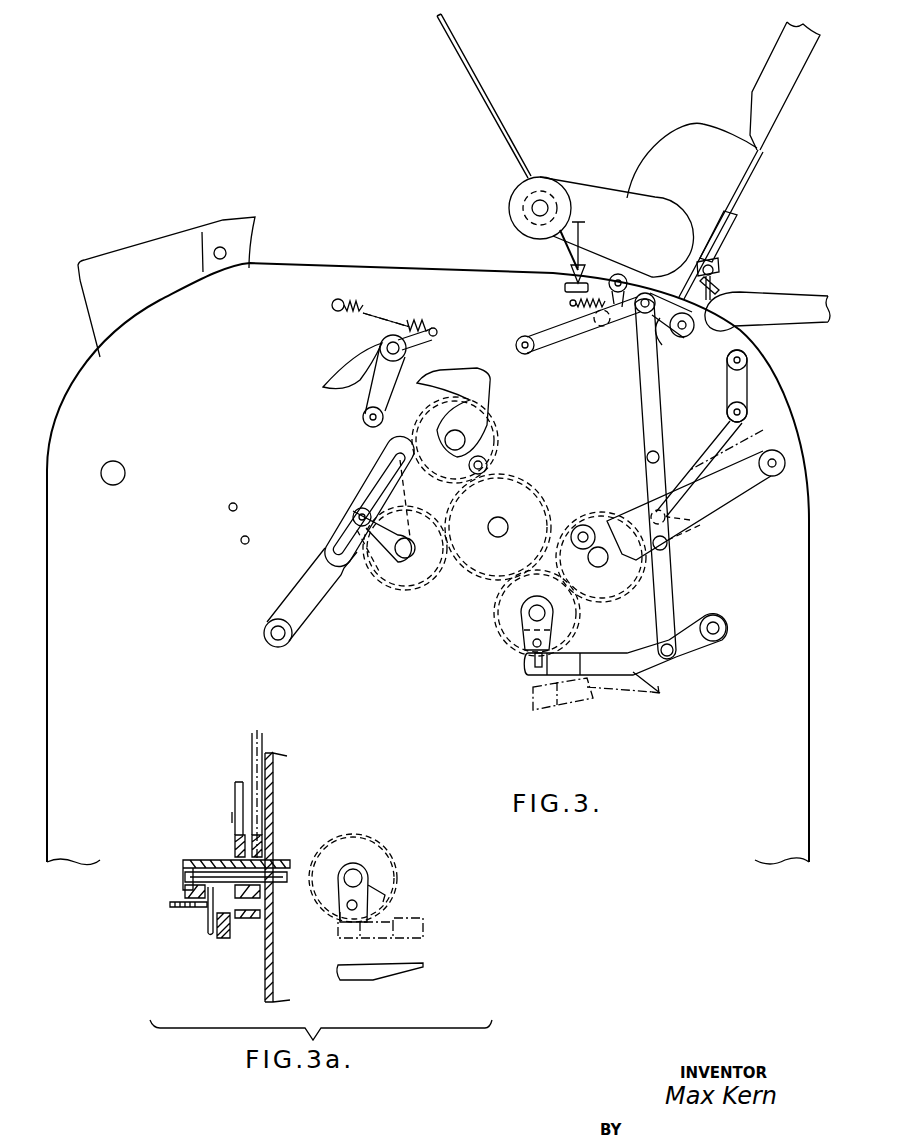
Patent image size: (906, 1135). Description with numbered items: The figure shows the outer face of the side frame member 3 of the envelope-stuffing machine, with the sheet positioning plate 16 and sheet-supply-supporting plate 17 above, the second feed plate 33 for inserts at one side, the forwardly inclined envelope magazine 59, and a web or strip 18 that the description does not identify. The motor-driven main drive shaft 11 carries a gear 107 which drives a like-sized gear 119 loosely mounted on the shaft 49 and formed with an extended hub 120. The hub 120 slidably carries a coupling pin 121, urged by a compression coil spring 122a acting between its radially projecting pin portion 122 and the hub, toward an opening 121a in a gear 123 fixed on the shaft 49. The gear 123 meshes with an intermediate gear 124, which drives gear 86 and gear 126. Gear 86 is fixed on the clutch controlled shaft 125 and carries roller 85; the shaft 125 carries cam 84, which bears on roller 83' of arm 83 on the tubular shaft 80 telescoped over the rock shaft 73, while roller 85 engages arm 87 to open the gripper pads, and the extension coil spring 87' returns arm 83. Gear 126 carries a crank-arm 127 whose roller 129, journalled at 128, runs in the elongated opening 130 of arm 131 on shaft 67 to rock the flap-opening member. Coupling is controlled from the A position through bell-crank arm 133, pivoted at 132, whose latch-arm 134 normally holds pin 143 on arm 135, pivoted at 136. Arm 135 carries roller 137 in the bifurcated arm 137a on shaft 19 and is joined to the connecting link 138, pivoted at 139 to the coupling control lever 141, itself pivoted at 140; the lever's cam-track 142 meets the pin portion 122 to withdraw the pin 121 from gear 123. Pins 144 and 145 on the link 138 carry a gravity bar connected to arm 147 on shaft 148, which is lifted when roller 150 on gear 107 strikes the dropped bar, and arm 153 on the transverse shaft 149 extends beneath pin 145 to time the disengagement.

In FIG. 3, the side frame member 3 is at (47, 746).
In FIG. 3a, the side frame member 3 is at (265, 970).
In FIG. 3, the main drive shaft 11 is at (598, 567).
In FIG. 3a, the main drive shaft 11 is at (232, 818).
In FIG. 3, the sheet positioning plate 16 is at (757, 150).
In FIG. 3, the sheet-supply-supporting plate 17 is at (497, 122).
In FIG. 3, the paper web 18 is at (677, 126).
In FIG. 3, the shaft 19 is at (692, 323).
In FIG. 3, the second feed plate 33 is at (797, 297).
In FIG. 3, the shaft 49 is at (545, 613).
In FIG. 3a, the shaft 49 is at (185, 874).
In FIG. 3, the magazine 59 is at (130, 247).
In FIG. 3, the shaft 67 is at (271, 637).
In FIG. 3, the rock shaft 73 is at (382, 345).
In FIG. 3, the tubular shaft 80 is at (406, 349).
In FIG. 3, the arm 83 is at (366, 380).
In FIG. 3, the roller 83' is at (354, 417).
In FIG. 3, the cam 84 is at (477, 367).
In FIG. 3, the roller 85 is at (489, 462).
In FIG. 3, the gear 86 is at (497, 437).
In FIG. 3, the arm 87 is at (343, 366).
In FIG. 3, the extension coil spring 87' is at (384, 306).
In FIG. 3, the gear 107 is at (600, 512).
In FIG. 3a, the gear 107 is at (235, 790).
In FIG. 3, the gear 119 is at (498, 632).
In FIG. 3a, the gear 119 is at (235, 845).
In FIG. 3a, the extended hub 120 is at (200, 858).
In FIG. 3a, the coupling pin 121 is at (190, 900).
In FIG. 3a, the opening 121a is at (252, 918).
In FIG. 3, the pin portion 122 is at (535, 660).
In FIG. 3a, the pin portion 122 is at (207, 922).
In FIG. 3a, the compression coil spring 122a is at (200, 905).
In FIG. 3, the gear 123 is at (480, 654).
In FIG. 3a, the gear 123 is at (257, 845).
In FIG. 3, the intermediate gear 124 is at (507, 521).
In FIG. 3a, the intermediate gear 124 is at (252, 741).
In FIG. 3, the clutch controlled shaft 125 is at (458, 437).
In FIG. 3, the gear 126 is at (418, 507).
In FIG. 3, the crank-arm 127 is at (368, 562).
In FIG. 3, the journal 128 is at (365, 505).
In FIG. 3, the roller 129 is at (353, 517).
In FIG. 3, the elongated opening 130 is at (393, 457).
In FIG. 3, the arm 131 is at (317, 568).
In FIG. 3, the pivot 132 is at (625, 278).
In FIG. 3, the bell-crank arm 133 is at (591, 281).
In FIG. 3, the latch-arm 134 is at (567, 293).
In FIG. 3, the arm 135 is at (550, 346).
In FIG. 3, the pivot 136 is at (530, 334).
In FIG. 3, the roller 137 is at (653, 297).
In FIG. 3, the bifurcated arm 137a is at (662, 340).
In FIG. 3, the connecting link 138 is at (650, 413).
In FIG. 3, the pivot 139 is at (673, 657).
In FIG. 3, the pivot 140 is at (717, 437).
In FIG. 3, the coupling control lever 141 is at (656, 690).
In FIG. 3a, the coupling control lever 141 is at (227, 940).
In FIG. 3, the cam-track 142 is at (557, 670).
In FIG. 3a, the cam-track 142 is at (222, 930).
In FIG. 3, the pin 143 is at (594, 326).
In FIG. 3, the pin 144 is at (685, 530).
In FIG. 3, the pin 145 is at (646, 455).
In FIG. 3, the arm 147 is at (727, 378).
In FIG. 3, the shaft 148 is at (746, 356).
In FIG. 3, the transverse shaft 149 is at (772, 476).
In FIG. 3, the roller 150 is at (583, 525).
In FIG. 3, the arm 153 is at (738, 478).